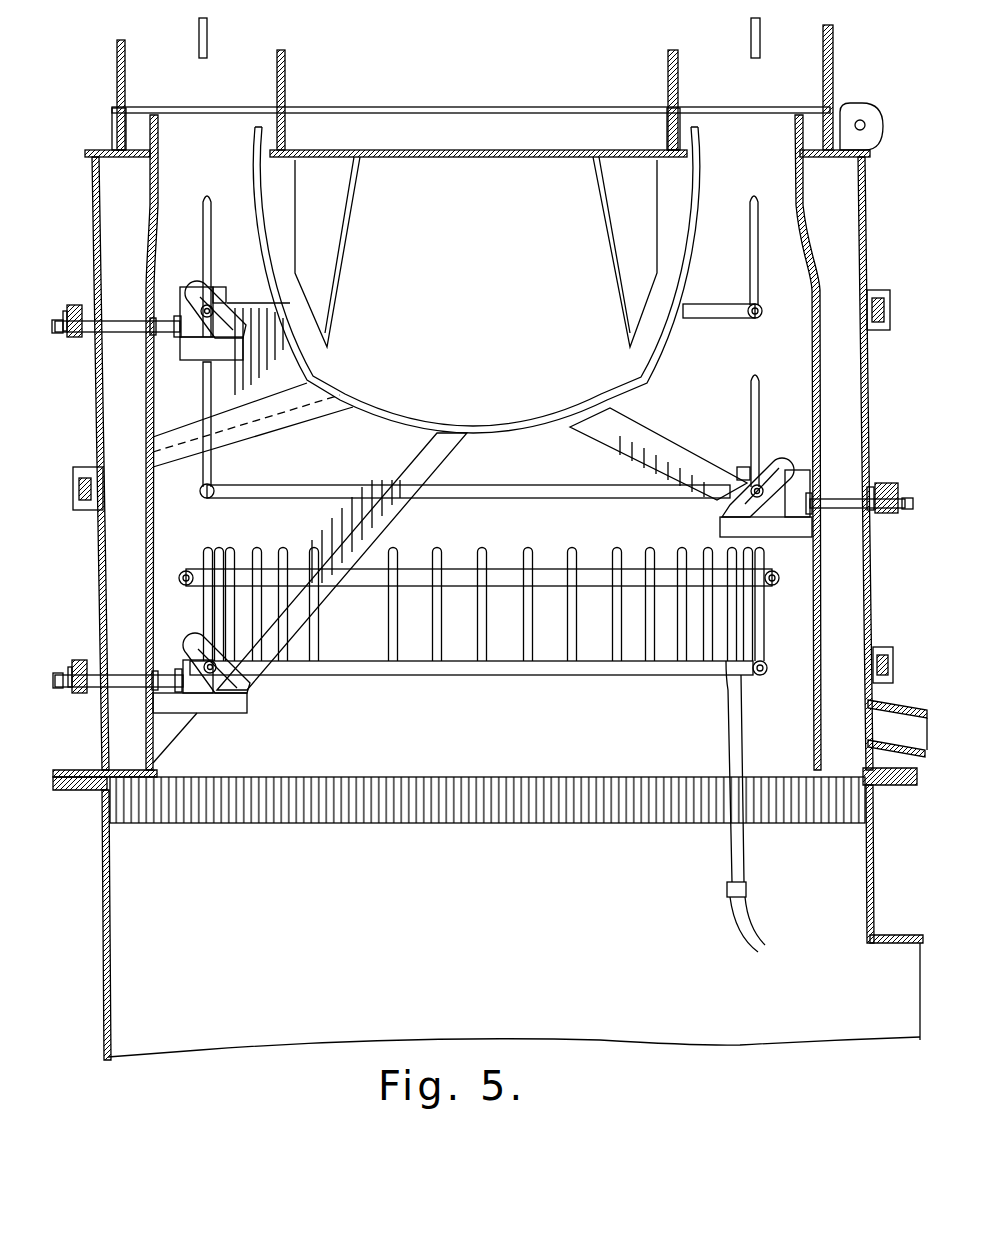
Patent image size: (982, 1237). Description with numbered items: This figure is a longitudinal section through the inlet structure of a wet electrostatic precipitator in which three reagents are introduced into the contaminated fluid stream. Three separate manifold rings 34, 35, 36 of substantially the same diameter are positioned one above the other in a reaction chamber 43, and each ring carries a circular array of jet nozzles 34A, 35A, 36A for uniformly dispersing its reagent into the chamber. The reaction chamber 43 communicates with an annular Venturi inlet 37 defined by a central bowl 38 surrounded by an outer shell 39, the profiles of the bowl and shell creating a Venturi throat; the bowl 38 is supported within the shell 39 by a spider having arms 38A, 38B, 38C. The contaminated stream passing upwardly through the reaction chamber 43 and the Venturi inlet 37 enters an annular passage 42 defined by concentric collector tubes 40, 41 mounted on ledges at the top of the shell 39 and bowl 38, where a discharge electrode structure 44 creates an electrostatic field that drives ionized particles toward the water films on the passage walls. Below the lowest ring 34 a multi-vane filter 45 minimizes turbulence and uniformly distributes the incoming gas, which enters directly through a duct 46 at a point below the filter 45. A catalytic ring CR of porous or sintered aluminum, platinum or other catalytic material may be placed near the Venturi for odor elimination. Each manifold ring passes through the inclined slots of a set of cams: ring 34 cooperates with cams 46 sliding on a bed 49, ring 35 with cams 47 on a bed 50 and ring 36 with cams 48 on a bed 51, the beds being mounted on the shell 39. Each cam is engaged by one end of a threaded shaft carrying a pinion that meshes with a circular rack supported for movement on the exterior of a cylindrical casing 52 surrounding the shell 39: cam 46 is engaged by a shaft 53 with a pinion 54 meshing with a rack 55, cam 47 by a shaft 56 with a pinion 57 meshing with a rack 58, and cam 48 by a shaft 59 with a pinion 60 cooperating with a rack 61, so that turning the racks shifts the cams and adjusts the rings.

The manifold ring 34 is at (472, 676).
The jet nozzles 34A is at (520, 568).
The manifold ring 35 is at (520, 485).
The jet nozzles 35A is at (212, 467).
The manifold ring 36 is at (712, 320).
The jet nozzles 36A is at (208, 207).
The annular Venturi inlet 37 is at (723, 230).
The central bowl 38 is at (703, 162).
The spider arm 38A is at (276, 422).
The spider arm 38B is at (400, 476).
The spider arm 38C is at (660, 445).
The outer shell 39 is at (796, 140).
The collector tube 40 is at (823, 75).
The collector tube 41 is at (667, 72).
The annular passage 42 is at (224, 96).
The reaction chamber 43 is at (492, 749).
The discharge electrode structure 44 is at (208, 22).
The multi-vane filter 45 is at (437, 818).
The cam (also inlet duct) 46 is at (190, 634).
The cam 47 is at (786, 462).
The cam 48 is at (190, 290).
The bed 49 is at (216, 712).
The bed 50 is at (785, 532).
The bed 51 is at (180, 356).
The cylindrical casing 52 is at (870, 588).
The threaded shaft 53 is at (125, 675).
The pinion 54 is at (78, 693).
The rack 55 is at (80, 660).
The threaded shaft 56 is at (838, 498).
The pinion 57 is at (884, 513).
The rack 58 is at (888, 483).
The threaded shaft 59 is at (125, 333).
The pinion 60 is at (76, 337).
The rack 61 is at (75, 305).
The catalytic ring CR is at (184, 570).